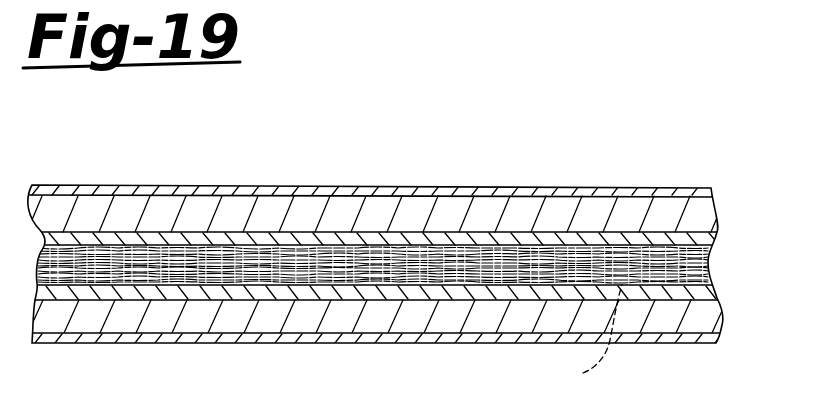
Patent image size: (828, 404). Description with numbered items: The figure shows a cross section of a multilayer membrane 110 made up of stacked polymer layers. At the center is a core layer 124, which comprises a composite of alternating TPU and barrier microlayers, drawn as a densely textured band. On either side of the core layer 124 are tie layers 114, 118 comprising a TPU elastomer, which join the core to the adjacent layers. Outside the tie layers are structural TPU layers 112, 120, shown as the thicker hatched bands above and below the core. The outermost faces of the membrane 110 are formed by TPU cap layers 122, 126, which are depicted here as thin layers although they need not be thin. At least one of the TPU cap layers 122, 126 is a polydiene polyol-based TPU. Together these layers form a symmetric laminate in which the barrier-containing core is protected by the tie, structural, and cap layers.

The membrane 110 is at (496, 180).
The structural TPU layer 112 is at (665, 213).
The tie layer 114 is at (715, 240).
The tie layer 118 is at (718, 293).
The structural TPU layer 120 is at (667, 320).
The TPU cap layer 122 is at (562, 194).
The core layer 124 is at (693, 271).
The TPU cap layer 126 is at (473, 340).